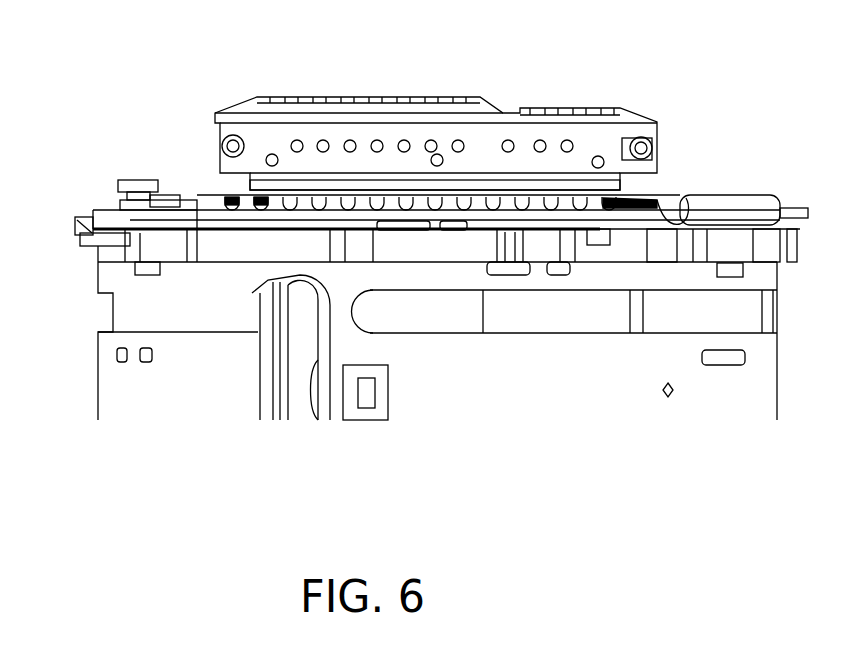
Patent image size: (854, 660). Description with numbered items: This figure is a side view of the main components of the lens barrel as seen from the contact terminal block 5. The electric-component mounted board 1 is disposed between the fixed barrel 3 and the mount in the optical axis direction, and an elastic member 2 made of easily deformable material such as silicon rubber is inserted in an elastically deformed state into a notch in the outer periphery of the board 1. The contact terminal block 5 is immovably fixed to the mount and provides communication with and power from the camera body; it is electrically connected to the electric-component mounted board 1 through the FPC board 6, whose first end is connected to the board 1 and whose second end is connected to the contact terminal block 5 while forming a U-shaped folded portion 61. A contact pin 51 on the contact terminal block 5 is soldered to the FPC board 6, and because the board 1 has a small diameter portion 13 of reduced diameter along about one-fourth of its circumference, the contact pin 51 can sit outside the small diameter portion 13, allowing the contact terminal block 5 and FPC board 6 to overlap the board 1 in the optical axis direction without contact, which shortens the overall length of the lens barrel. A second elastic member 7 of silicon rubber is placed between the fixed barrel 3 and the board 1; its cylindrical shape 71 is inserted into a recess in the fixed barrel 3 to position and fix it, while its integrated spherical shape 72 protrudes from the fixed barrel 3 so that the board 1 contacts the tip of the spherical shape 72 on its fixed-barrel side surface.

The electric-component mounted board 1 is at (123, 215).
The elastic member 2 is at (140, 182).
The fixed barrel 3 is at (223, 270).
The contact terminal block 5 is at (595, 146).
The contact pin 51 is at (468, 203).
The FPC board 6 is at (700, 193).
The folded portion 61 is at (677, 205).
The elastic member 7 is at (435, 465).
The cylindrical shape 71 is at (413, 220).
The spherical shape 72 is at (403, 220).
The small diameter portion 13 is at (443, 215).